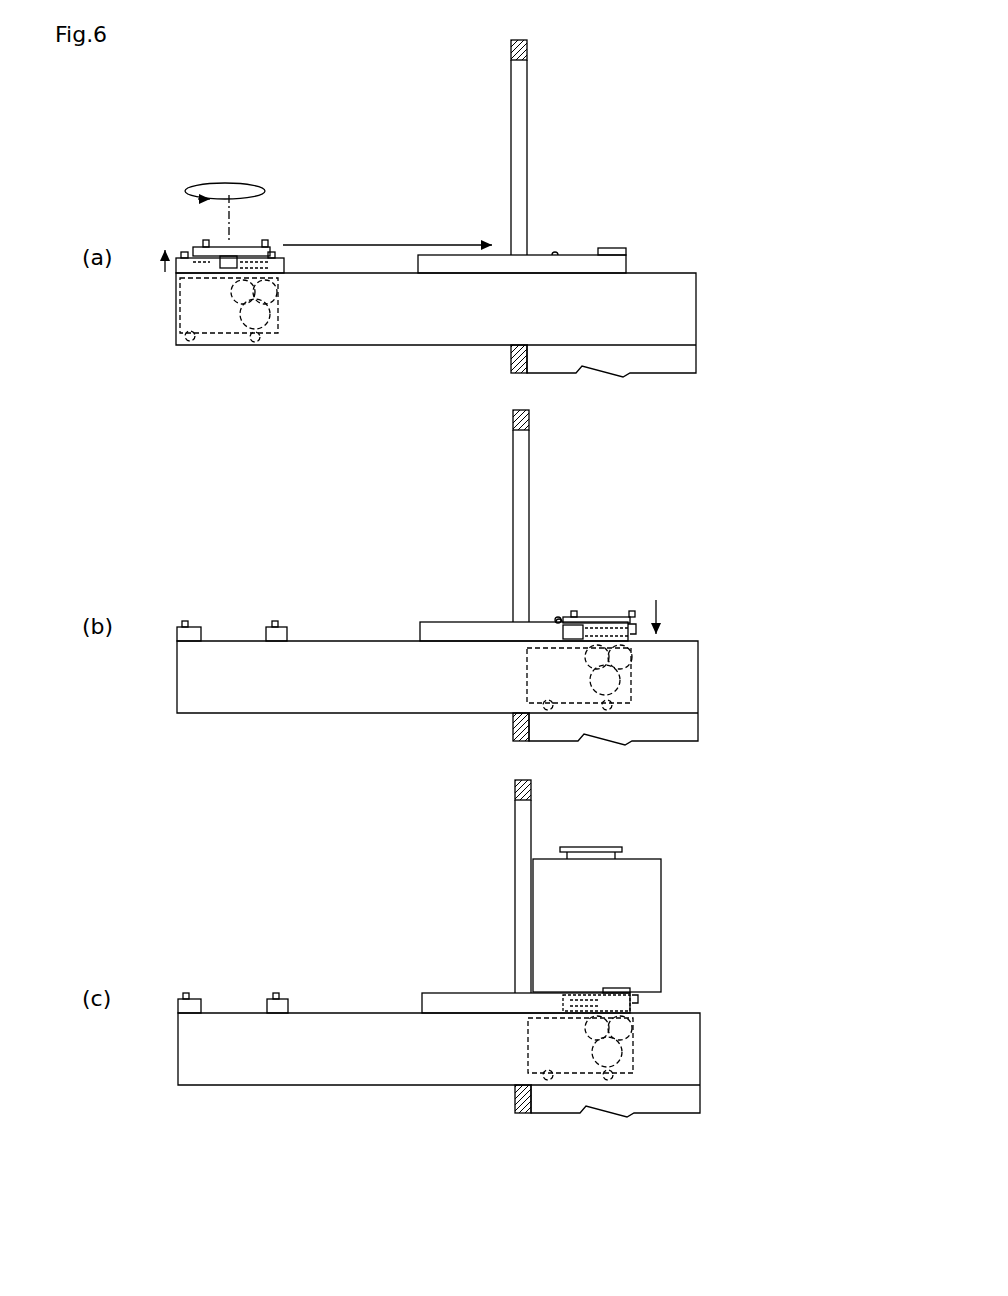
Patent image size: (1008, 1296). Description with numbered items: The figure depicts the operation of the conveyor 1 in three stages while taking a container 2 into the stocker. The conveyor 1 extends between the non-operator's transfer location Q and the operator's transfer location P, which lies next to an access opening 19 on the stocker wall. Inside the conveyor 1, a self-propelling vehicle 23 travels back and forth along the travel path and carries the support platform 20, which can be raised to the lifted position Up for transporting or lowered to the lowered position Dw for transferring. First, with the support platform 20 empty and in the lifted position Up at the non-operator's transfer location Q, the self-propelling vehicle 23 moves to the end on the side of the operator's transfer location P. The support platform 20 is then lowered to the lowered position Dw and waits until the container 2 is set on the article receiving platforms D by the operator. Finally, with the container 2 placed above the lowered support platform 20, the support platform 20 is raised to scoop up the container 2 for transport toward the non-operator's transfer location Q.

The conveyor 1 is at (330, 332).
The container 2 is at (640, 932).
The access opening 19 is at (500, 123).
The support platform 20 is at (258, 228).
The self-propelling vehicle 23 is at (176, 328).
The article receiving platforms D is at (540, 258).
The non-operator's transfer location Q is at (172, 200).
The operator's transfer location P is at (622, 198).